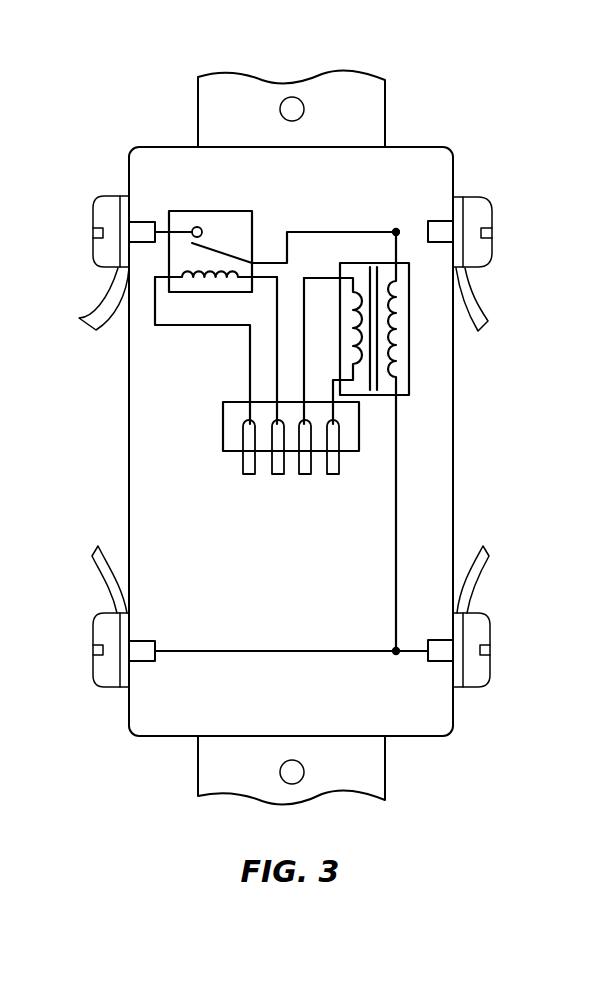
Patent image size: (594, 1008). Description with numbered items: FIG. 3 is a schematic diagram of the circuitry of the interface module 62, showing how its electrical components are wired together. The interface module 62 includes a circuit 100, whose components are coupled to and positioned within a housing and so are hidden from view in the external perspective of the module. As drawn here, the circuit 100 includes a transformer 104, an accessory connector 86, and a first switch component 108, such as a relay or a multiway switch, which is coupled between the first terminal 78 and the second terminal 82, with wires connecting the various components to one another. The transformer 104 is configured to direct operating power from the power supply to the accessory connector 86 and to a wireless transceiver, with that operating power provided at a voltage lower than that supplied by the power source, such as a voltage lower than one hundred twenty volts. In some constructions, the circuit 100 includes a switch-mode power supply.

The interface module 62 is at (309, 437).
The first terminal 78 is at (475, 207).
The second terminal 82 is at (103, 205).
The accessory connector 86 is at (359, 425).
The circuit 100 is at (443, 441).
The transformer 104 is at (410, 348).
The first switch component 108 is at (190, 209).